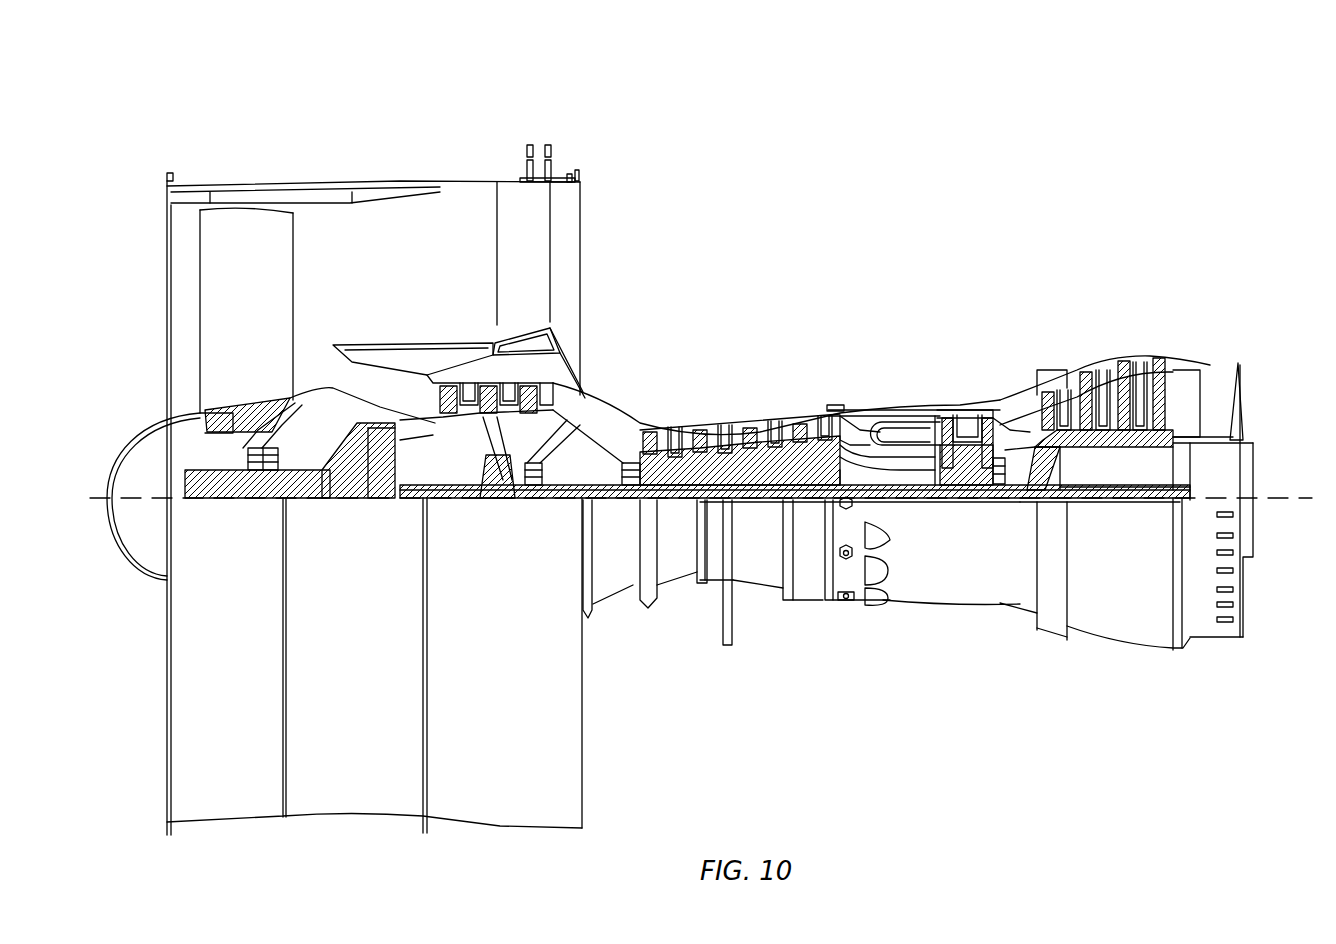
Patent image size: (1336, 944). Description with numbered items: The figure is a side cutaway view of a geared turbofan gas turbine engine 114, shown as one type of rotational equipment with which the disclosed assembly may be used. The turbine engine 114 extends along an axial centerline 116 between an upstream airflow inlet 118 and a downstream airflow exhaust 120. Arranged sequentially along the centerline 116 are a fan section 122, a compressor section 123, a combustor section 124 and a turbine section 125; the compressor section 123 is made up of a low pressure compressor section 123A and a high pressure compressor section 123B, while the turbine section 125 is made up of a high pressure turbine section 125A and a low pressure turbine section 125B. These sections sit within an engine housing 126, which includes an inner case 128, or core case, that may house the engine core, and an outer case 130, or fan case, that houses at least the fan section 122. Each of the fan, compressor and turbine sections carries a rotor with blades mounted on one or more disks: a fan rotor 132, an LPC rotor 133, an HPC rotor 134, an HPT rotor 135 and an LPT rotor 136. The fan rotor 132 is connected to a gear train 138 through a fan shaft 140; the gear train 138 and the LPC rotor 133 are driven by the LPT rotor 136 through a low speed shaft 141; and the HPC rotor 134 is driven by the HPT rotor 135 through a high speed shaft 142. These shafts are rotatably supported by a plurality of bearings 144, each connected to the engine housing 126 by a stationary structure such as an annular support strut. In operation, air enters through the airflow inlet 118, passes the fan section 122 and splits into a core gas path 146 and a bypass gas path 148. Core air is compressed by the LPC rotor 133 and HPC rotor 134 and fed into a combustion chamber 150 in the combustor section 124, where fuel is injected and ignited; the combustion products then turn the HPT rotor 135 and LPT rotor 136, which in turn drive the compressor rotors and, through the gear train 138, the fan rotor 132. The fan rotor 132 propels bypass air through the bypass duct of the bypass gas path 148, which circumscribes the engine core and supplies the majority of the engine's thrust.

The geared turbofan gas turbine engine 114 is at (128, 158).
The axial centerline 116 is at (1302, 512).
The upstream airflow inlet 118 is at (167, 262).
The downstream airflow exhaust 120 is at (1240, 397).
The fan section 122 is at (338, 160).
The compressor section 123 is at (807, 97).
The low pressure compressor (LPC) section 123A is at (582, 140).
The high pressure compressor (HPC) section 123B is at (807, 340).
The combustor section 124 is at (933, 340).
The turbine section 125 is at (1202, 268).
The high pressure turbine (HPT) section 125A is at (1017, 340).
The low pressure turbine (LPT) section 125B is at (1202, 340).
The engine housing 126 is at (605, 615).
The inner case 128 is at (803, 603).
The outer case 130 is at (578, 828).
The fan rotor 132 is at (186, 414).
The LPC rotor 133 is at (488, 475).
The HPC rotor 134 is at (752, 465).
The HPT rotor 135 is at (963, 473).
The LPT rotor 136 is at (1112, 445).
The gear train 138 is at (378, 500).
The fan shaft 140 is at (232, 500).
The low speed shaft 141 is at (1117, 498).
The high speed shaft 142 is at (900, 473).
The bearings 144 is at (274, 500).
The core gas path 146 is at (606, 428).
The bypass gas path 148 is at (412, 290).
The combustion chamber 150 is at (890, 430).